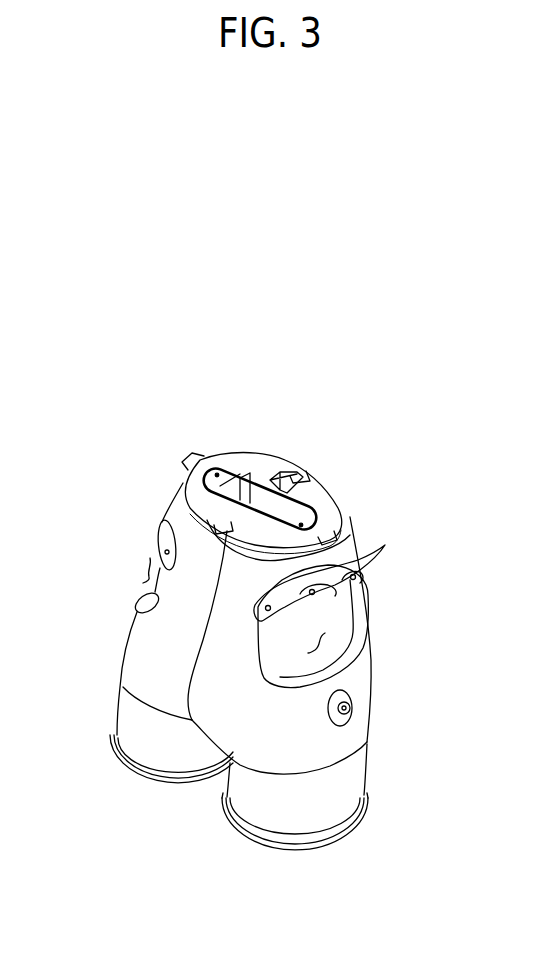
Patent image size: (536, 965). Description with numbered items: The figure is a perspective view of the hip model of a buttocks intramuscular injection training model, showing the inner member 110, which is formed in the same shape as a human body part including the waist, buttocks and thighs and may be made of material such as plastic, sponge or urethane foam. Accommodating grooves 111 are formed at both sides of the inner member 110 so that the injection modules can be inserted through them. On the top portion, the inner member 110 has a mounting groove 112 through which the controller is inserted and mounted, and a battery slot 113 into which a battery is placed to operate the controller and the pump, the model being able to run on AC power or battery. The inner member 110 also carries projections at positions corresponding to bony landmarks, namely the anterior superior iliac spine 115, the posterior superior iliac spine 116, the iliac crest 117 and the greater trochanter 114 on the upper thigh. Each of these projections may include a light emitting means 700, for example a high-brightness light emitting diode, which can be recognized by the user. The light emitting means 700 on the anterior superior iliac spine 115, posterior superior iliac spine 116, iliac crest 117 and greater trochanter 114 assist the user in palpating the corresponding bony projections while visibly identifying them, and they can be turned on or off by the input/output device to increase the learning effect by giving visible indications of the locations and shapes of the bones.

The inner member 110 is at (379, 460).
The accommodating groove 111 is at (143, 577).
The mounting groove 112 is at (249, 502).
The battery slot 113 is at (289, 494).
The greater trochanter 114 is at (350, 709).
The anterior superior iliac spine 115 is at (352, 577).
The posterior superior iliac spine 116 is at (270, 612).
The iliac crest 117 is at (315, 600).
The light emitting means 700 is at (160, 546).